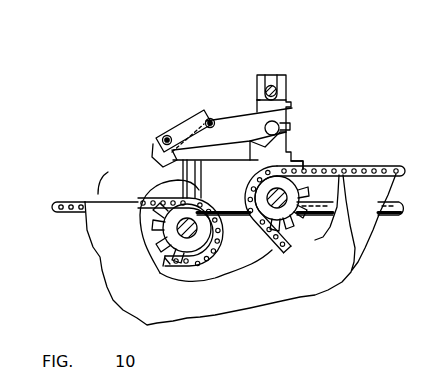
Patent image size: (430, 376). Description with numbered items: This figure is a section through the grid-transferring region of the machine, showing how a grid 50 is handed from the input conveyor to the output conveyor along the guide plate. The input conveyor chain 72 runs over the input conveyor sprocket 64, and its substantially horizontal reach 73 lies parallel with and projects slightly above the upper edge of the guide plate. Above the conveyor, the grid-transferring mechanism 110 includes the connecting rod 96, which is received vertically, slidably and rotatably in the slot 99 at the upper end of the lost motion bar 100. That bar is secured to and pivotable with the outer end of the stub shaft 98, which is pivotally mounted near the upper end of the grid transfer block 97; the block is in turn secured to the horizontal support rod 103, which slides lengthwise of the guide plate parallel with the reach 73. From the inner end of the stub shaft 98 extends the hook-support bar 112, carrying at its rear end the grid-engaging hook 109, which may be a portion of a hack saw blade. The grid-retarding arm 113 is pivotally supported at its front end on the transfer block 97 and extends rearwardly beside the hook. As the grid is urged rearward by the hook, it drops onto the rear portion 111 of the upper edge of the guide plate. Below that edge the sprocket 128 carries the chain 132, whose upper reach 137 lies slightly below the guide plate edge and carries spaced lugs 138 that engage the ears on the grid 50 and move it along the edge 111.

The grid 50 is at (136, 204).
The input conveyor sprocket 64 is at (295, 230).
The input conveyor chain 72 is at (273, 246).
The horizontal reach 73 is at (388, 168).
The connecting rod 96 is at (291, 105).
The grid transfer block 97 is at (291, 163).
The stub shaft 98 is at (247, 160).
The slot 99 is at (273, 75).
The lost motion bar 100 is at (261, 98).
The horizontal support rod 103 is at (400, 212).
The grid-engaging hook 109 is at (175, 127).
The grid-transferring mechanism 110 is at (304, 123).
The rear portion of the upper edge 111 is at (119, 180).
The hook-support bar 112 is at (230, 117).
The grid-retarding arm 113 is at (168, 160).
The sprocket 128 is at (213, 252).
The chain 132 is at (174, 280).
The upper reach 137 is at (65, 218).
The lug 138 is at (141, 237).